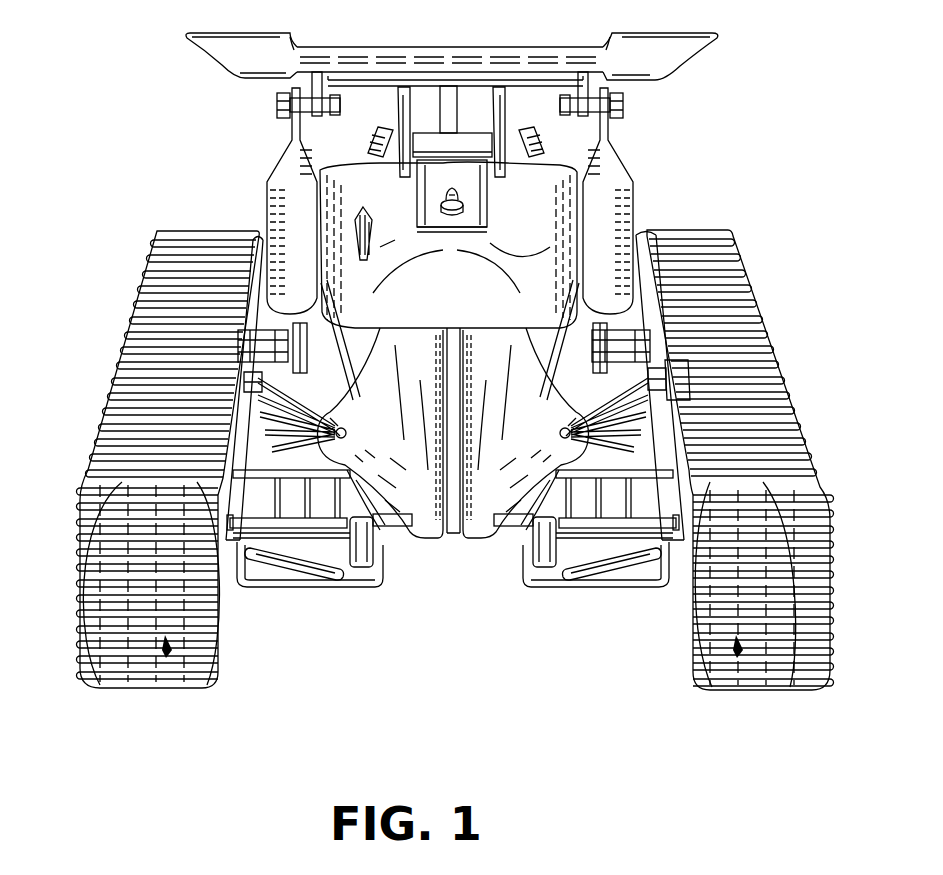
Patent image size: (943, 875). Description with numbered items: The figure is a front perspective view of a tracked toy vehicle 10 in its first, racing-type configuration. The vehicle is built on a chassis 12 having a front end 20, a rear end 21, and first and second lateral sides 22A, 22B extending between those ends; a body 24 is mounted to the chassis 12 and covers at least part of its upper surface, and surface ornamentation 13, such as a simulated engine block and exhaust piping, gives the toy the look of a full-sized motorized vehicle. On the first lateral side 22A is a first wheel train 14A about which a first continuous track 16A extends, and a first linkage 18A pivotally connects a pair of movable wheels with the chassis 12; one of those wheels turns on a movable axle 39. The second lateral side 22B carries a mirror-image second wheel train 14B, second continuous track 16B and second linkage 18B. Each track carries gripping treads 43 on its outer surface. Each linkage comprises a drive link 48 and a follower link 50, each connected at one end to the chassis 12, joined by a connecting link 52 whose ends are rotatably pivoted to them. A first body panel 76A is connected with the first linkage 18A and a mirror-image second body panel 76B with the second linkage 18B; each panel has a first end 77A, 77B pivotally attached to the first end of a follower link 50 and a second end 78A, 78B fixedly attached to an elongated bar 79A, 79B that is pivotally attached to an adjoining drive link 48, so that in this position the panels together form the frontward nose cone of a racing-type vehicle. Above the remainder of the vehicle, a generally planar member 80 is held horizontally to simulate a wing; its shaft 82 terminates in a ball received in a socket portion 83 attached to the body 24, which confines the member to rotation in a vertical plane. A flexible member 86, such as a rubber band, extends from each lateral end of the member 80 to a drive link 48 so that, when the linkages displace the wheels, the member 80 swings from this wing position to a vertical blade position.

The toy vehicle 10 is at (212, 175).
The chassis 12 is at (690, 372).
The surface ornamentation 13 is at (505, 112).
The first wheel train 14A is at (735, 698).
The second wheel train 14B is at (160, 698).
The first continuous track 16A is at (741, 226).
The second continuous track 16B is at (162, 226).
The first linkage 18A is at (672, 491).
The second linkage 18B is at (222, 488).
The front end 20 is at (453, 449).
The rear end 21 is at (560, 172).
The first lateral side 22A is at (666, 379).
The second lateral side 22B is at (262, 383).
The body 24 is at (470, 290).
The axle 39 is at (266, 563).
The gripping treads 43 is at (95, 580).
The drive link 48 is at (250, 340).
The follower link 50 is at (308, 574).
The connecting link 52 is at (258, 348).
The first body panel 76A is at (487, 548).
The second body panel 76B is at (420, 548).
The first end of first body panel 77A is at (497, 540).
The first end of second body panel 77B is at (410, 540).
The second end of first body panel 78A is at (655, 405).
The second end of second body panel 78B is at (262, 410).
The elongated bar 79A is at (605, 340).
The elongated bar 79B is at (298, 345).
The planar member 80 is at (492, 55).
The shaft 82 is at (450, 98).
The socket portion 83 is at (428, 146).
The flexible member 86 is at (290, 166).